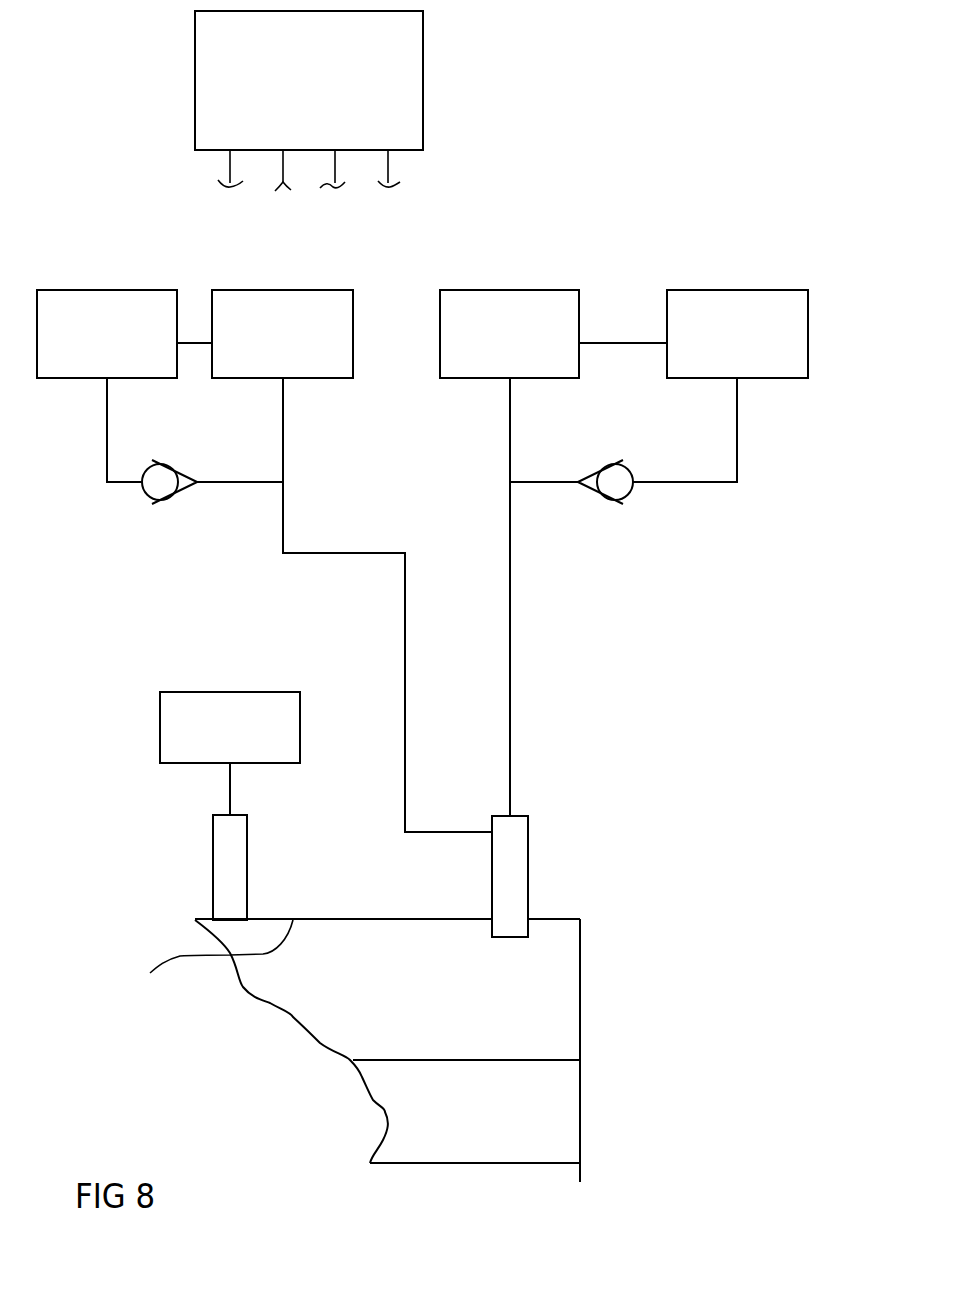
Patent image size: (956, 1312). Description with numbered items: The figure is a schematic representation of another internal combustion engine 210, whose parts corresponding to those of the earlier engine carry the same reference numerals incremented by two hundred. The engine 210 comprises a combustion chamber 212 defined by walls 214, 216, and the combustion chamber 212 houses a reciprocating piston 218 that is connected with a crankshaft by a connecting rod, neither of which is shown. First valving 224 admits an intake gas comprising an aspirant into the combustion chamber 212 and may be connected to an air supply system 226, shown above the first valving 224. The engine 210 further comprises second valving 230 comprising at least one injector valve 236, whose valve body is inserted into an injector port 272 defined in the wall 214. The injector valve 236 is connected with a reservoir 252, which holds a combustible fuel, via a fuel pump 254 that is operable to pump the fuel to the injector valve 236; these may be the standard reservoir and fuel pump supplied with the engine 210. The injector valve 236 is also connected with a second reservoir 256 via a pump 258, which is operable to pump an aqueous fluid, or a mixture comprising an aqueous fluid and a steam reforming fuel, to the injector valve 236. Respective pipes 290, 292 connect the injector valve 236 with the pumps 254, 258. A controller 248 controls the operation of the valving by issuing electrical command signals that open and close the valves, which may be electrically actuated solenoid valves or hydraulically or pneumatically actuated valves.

The controller 248 is at (309, 101).
The internal combustion engine 210 is at (584, 164).
The reservoir 252 is at (107, 334).
The fuel pump 254 is at (282, 334).
The second reservoir 256 is at (737, 334).
The pump 258 is at (509, 334).
The pipe 290 is at (405, 640).
The pipe 292 is at (510, 657).
The air supply system 226 is at (230, 753).
The first valving 224 is at (212, 870).
The second valving 230 is at (571, 827).
The injector port 272 is at (492, 917).
The injector valve 236 is at (528, 905).
The wall 214 is at (205, 966).
The combustion chamber 212 is at (387, 1041).
The wall 216 is at (580, 990).
The reciprocating piston 218 is at (543, 1140).